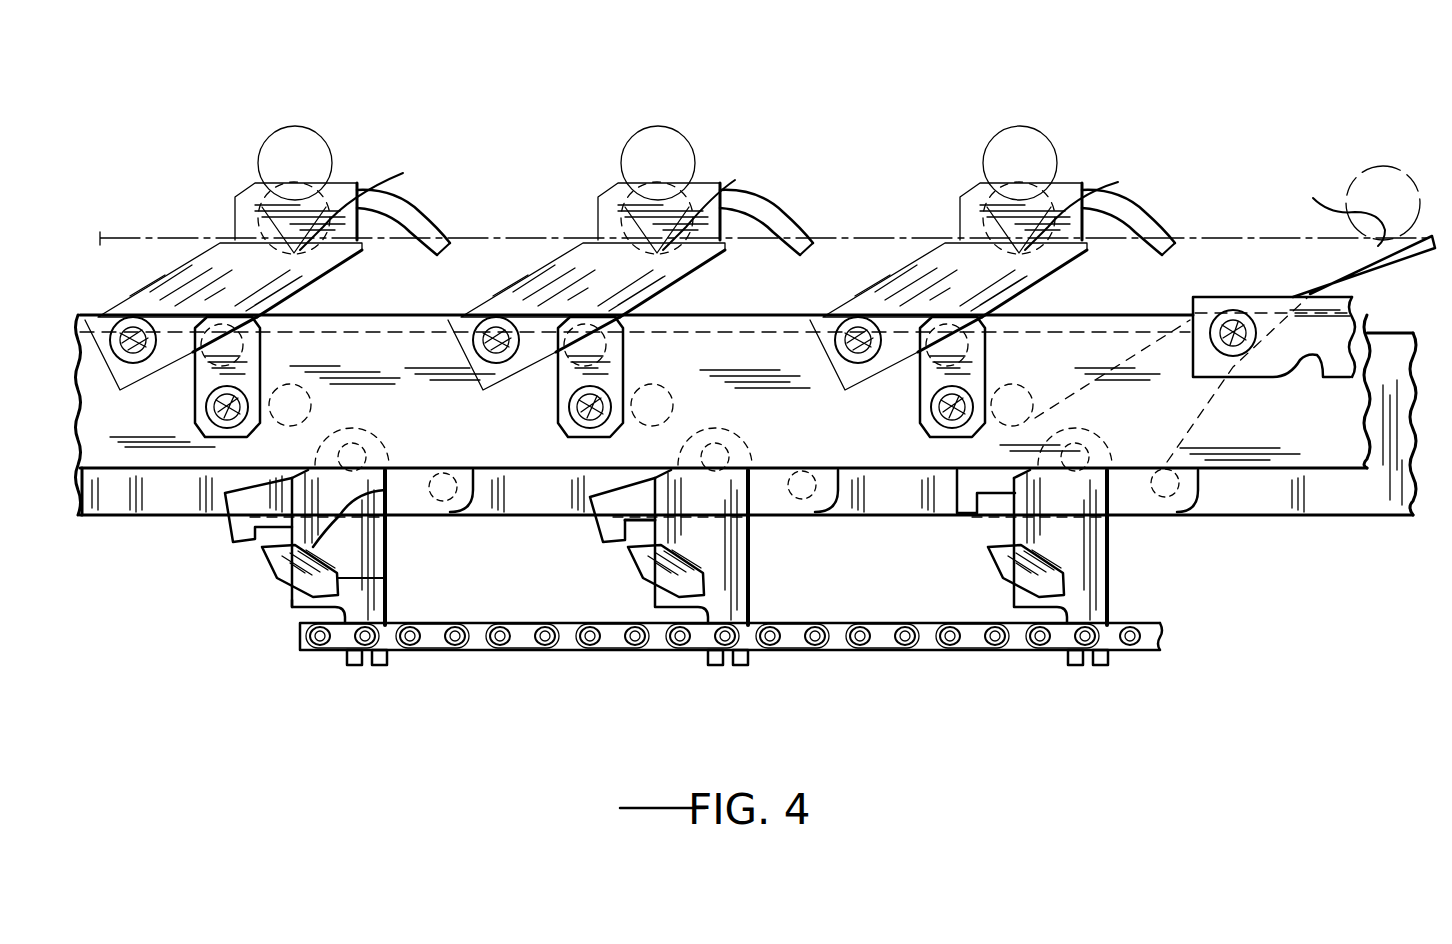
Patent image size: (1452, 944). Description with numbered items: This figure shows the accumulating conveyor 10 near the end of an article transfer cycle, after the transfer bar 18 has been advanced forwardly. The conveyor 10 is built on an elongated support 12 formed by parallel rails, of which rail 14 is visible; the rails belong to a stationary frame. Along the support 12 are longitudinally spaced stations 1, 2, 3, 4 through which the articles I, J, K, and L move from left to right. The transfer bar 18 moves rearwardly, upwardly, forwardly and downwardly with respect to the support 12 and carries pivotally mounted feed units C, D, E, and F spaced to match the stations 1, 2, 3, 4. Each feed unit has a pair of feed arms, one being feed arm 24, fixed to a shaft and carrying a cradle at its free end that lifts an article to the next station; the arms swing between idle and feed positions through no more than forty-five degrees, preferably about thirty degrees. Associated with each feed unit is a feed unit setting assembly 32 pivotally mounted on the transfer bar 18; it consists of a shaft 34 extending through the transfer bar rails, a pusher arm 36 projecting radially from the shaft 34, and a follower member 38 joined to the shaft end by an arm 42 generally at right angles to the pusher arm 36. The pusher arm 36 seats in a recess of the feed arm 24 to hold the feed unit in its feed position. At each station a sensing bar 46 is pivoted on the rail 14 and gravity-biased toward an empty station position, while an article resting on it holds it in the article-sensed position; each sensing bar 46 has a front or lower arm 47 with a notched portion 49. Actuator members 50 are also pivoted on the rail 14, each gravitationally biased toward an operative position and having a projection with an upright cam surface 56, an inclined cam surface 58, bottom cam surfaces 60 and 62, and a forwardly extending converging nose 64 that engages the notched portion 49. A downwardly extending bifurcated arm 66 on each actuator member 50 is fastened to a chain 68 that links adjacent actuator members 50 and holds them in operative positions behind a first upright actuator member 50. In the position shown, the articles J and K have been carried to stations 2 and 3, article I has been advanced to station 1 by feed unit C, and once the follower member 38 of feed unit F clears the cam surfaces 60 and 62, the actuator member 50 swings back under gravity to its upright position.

The accumulating conveyor 10 is at (295, 680).
The elongated support 12 is at (1291, 523).
The rail 14 is at (1362, 517).
The transfer bar 18 is at (1247, 475).
The feed arm 24 is at (327, 268).
The feed unit setting assembly 32 is at (187, 405).
The shaft 34 is at (237, 427).
The pusher arm 36 is at (625, 360).
The follower member 38 is at (317, 398).
The arm 42 is at (267, 373).
The sensing bar 46 is at (437, 215).
The front or lower arm 47 is at (590, 500).
The notched portion 49 is at (603, 547).
The actuator member 50 is at (388, 532).
The upright cam surface 56 is at (387, 578).
The inclined cam surface 58 is at (387, 490).
The bottom cam surface 60 is at (313, 608).
The bottom cam surface 62 is at (277, 580).
The converging nose 64 is at (258, 558).
The bifurcated arm 66 is at (390, 617).
The chain 68 is at (522, 652).
The station 1 is at (361, 199).
The station 2 is at (710, 204).
The station 3 is at (1084, 205).
The station 4 is at (1339, 208).
The feed unit C is at (243, 196).
The feed unit D is at (606, 196).
The feed unit E is at (968, 196).
The feed unit F is at (1288, 297).
The article I is at (293, 126).
The article J is at (658, 126).
The article K is at (1018, 126).
The article L is at (1393, 167).